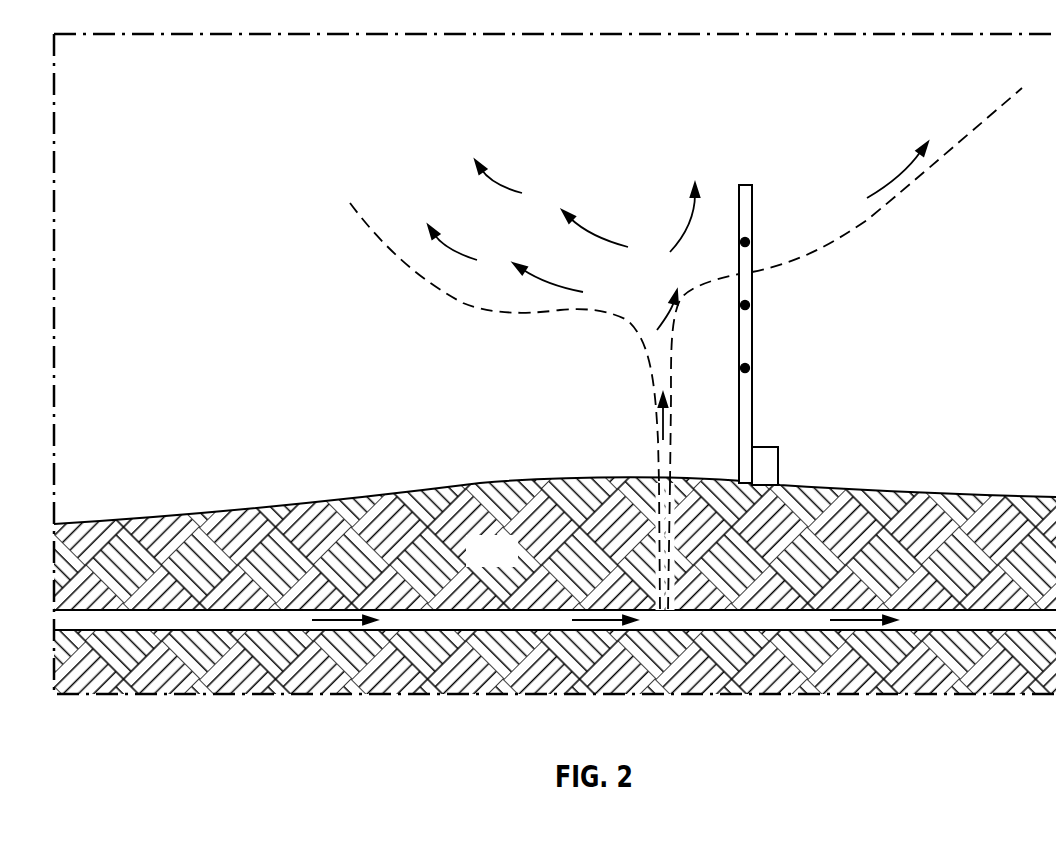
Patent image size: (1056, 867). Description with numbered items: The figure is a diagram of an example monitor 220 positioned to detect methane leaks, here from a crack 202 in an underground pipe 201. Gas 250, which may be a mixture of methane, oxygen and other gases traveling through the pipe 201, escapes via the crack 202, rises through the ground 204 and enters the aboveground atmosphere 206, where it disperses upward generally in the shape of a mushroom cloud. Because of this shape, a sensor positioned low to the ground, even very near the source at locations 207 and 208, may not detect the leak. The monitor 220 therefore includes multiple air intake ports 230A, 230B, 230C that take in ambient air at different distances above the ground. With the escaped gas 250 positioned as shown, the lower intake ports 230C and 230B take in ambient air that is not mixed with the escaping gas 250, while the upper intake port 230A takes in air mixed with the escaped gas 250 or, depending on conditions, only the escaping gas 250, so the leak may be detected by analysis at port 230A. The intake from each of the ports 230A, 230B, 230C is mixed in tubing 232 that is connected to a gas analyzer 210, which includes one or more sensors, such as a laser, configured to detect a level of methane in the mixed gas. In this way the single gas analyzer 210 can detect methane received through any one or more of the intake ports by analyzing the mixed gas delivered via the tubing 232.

The underground pipe 201 is at (833, 632).
The crack 202 is at (725, 578).
The ground 204 is at (512, 563).
The aboveground atmosphere 206 is at (353, 403).
The location 207 is at (508, 480).
The location 208 is at (712, 480).
The gas analyzer 210 is at (778, 468).
The monitor 220 is at (843, 335).
The air intake port 230A is at (753, 242).
The air intake port 230B is at (752, 305).
The air intake port 230C is at (803, 350).
The tubing 232 is at (752, 410).
The gas 250 is at (655, 201).